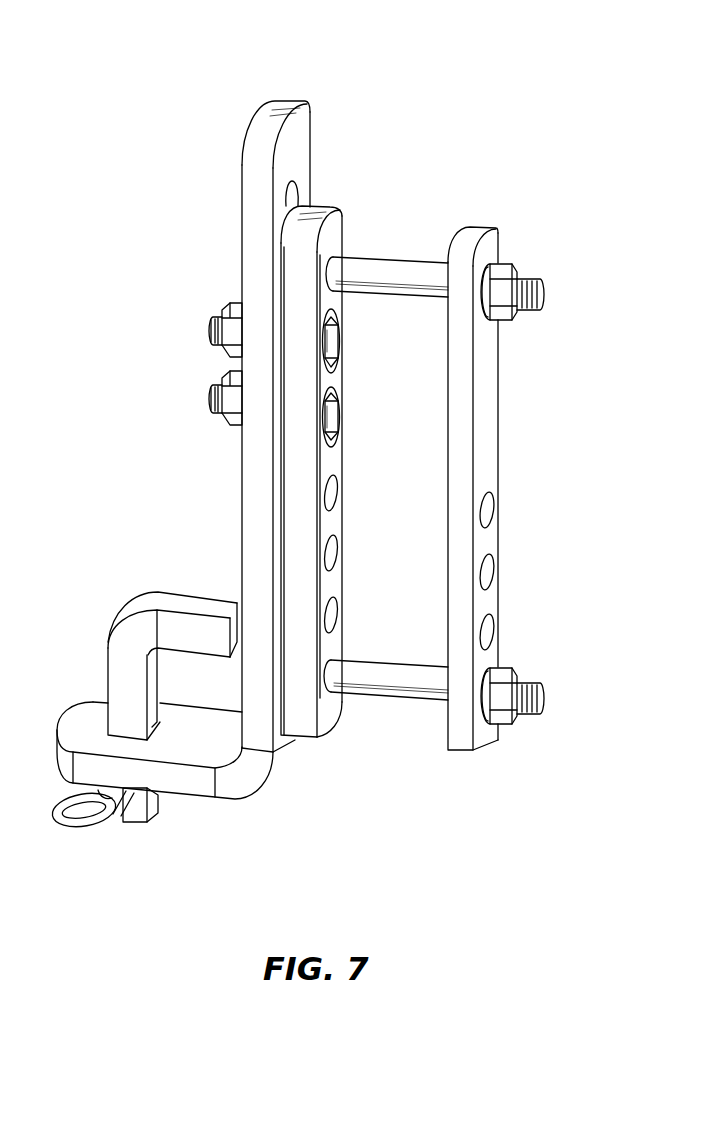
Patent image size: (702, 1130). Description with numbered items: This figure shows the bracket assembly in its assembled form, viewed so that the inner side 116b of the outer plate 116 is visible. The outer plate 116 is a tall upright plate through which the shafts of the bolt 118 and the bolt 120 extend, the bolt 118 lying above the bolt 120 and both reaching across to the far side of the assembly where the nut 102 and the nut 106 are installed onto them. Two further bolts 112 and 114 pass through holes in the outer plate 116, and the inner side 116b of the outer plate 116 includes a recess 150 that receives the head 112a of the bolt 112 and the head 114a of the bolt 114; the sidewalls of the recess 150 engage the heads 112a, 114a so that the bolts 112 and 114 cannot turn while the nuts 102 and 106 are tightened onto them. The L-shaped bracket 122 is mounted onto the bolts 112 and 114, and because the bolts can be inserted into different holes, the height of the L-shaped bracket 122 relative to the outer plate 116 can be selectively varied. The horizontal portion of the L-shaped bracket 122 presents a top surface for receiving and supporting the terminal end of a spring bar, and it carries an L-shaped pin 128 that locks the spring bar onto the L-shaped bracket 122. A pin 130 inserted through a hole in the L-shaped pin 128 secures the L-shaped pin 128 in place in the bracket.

The nut 102 is at (236, 303).
The nut 106 is at (230, 420).
The bolt 112 is at (208, 332).
The head of the bolt 112a is at (333, 335).
The bolt 114 is at (207, 398).
The head of the bolt 114a is at (341, 432).
The outer plate 116 is at (316, 226).
The inner side of the outer plate 116b is at (341, 372).
The bolt 118 is at (420, 273).
The bolt 120 is at (393, 686).
The L-shaped bracket 122 is at (275, 118).
The L-shaped pin 128 is at (135, 608).
The pin 130 is at (84, 828).
The recess 150 is at (342, 383).